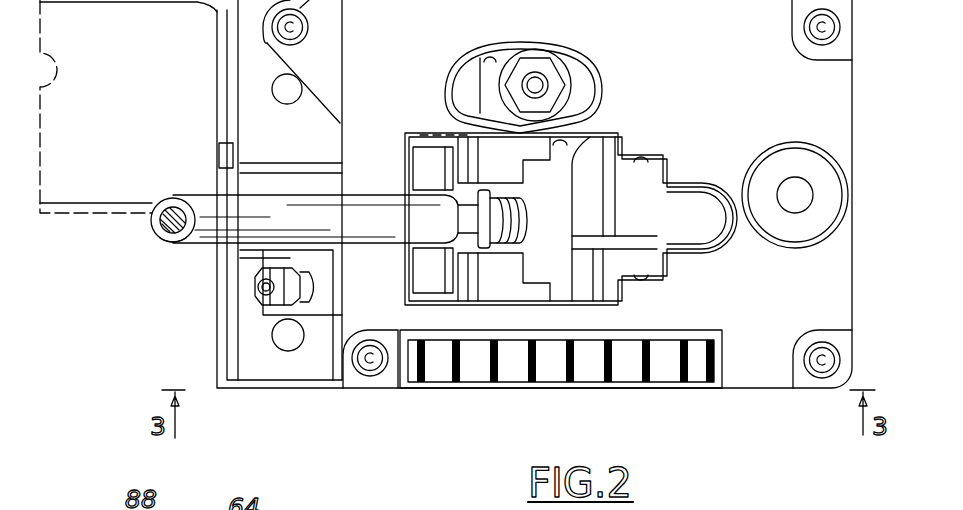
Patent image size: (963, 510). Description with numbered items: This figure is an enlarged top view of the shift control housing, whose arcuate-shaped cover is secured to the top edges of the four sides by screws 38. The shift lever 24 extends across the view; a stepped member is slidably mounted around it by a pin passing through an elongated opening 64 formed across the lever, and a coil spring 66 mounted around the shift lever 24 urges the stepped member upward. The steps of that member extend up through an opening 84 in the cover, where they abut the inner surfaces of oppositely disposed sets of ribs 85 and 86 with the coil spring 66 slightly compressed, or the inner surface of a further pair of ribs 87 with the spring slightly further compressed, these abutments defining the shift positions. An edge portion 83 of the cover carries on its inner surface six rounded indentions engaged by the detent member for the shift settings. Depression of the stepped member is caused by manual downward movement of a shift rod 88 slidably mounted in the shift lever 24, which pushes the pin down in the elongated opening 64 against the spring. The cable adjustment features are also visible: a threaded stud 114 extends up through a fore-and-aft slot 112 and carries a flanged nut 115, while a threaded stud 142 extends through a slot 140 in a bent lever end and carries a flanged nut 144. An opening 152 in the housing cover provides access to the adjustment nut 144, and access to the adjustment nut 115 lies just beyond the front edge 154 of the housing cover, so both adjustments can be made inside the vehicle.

The shift lever 24 is at (362, 195).
The screws 38 is at (377, 378).
The elongated opening 64 is at (167, 244).
The coil spring 66 is at (523, 230).
The edge portion 83 is at (473, 373).
The opening 84 is at (415, 145).
The ribs 85 is at (505, 163).
The ribs 86 is at (650, 162).
The ribs 87 is at (670, 185).
The shift rod 88 is at (153, 238).
The slot 112 is at (320, 280).
The threaded stud 114 is at (258, 286).
The flanged nut 115 is at (257, 303).
The slot 140 is at (585, 70).
The threaded stud 142 is at (535, 78).
The flanged nut 144 is at (557, 62).
The opening 152 is at (490, 62).
The front edge 154 is at (340, 328).